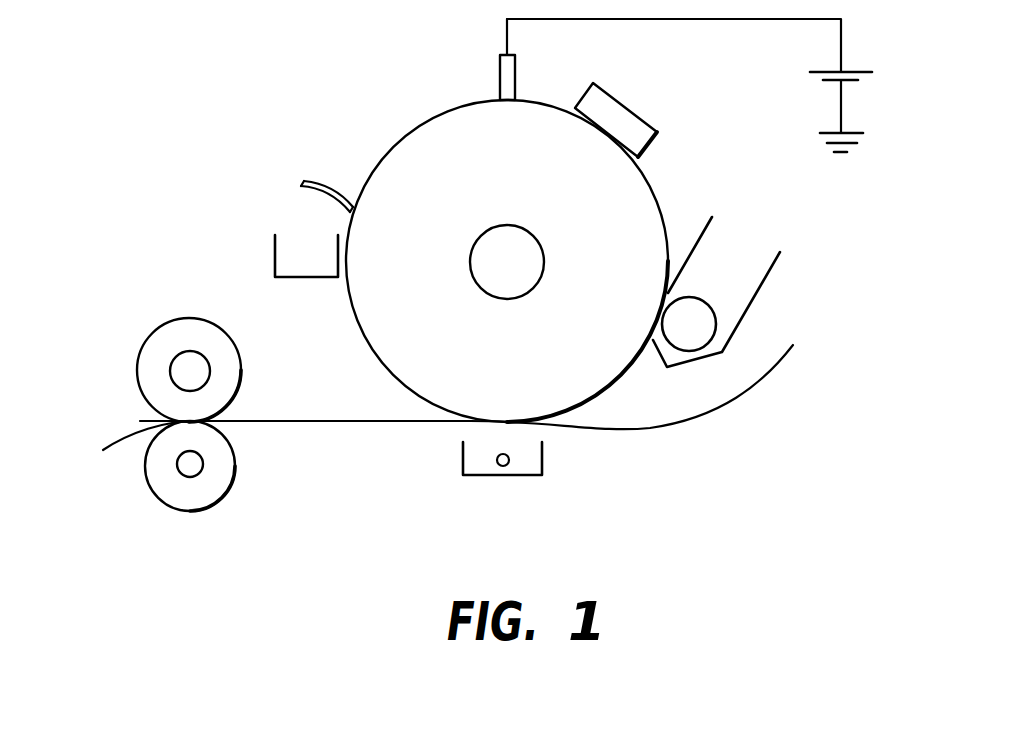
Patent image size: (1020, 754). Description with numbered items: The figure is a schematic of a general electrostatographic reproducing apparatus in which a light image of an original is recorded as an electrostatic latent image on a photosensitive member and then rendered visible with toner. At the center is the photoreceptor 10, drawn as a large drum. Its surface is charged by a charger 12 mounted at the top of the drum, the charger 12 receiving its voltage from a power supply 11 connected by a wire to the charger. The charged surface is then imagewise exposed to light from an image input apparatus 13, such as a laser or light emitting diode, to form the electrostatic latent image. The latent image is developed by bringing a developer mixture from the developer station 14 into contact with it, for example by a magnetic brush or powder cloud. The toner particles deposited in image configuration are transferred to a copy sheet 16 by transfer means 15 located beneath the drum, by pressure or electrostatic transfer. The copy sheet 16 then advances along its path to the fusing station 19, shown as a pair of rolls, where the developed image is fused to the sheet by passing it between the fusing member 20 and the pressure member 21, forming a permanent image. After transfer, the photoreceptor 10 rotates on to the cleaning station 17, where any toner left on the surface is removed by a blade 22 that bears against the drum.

The photoreceptor 10 is at (657, 198).
The power supply 11 is at (841, 47).
The charger 12 is at (512, 82).
The image input apparatus 13 is at (633, 122).
The developer station 14 is at (724, 268).
The transfer means 15 is at (542, 475).
The copy sheet 16 is at (745, 382).
The cleaning station 17 is at (289, 210).
The fusing station 19 is at (124, 375).
The fusing member 20 is at (233, 355).
The pressure member 21 is at (228, 473).
The blade 22 is at (320, 196).